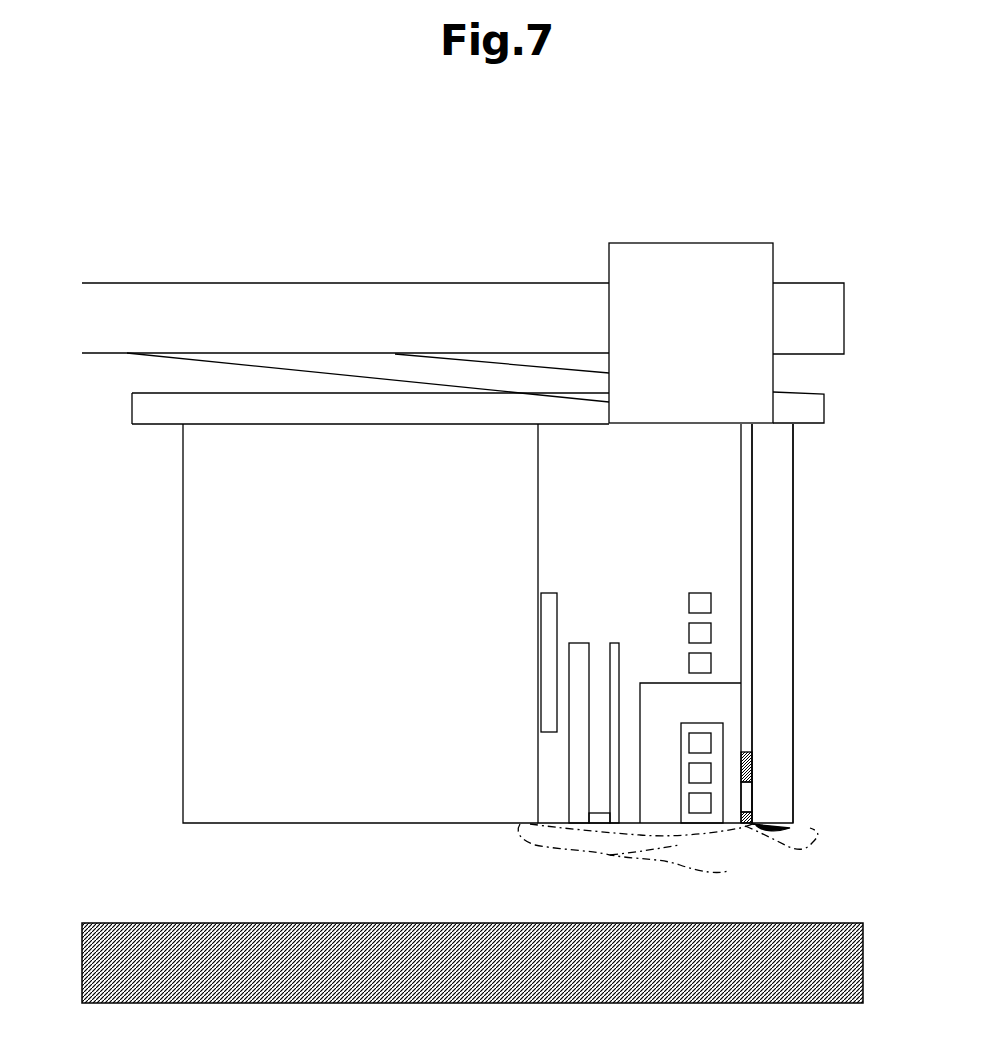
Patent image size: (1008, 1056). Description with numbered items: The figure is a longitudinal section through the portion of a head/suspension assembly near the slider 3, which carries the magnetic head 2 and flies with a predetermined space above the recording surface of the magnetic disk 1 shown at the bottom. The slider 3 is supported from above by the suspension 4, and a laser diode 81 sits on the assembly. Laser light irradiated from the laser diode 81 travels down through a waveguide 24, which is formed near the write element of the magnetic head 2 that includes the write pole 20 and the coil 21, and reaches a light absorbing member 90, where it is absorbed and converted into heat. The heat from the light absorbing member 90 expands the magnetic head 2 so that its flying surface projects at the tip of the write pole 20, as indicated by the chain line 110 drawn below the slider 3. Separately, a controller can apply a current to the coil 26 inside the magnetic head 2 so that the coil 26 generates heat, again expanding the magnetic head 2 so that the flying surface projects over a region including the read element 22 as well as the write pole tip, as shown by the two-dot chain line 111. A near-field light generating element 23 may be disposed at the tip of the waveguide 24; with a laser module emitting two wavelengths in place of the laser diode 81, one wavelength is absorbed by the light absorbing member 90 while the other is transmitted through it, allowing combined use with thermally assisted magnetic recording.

The magnetic disk 1 is at (289, 942).
The magnetic head 2 is at (612, 452).
The slider 3 is at (212, 772).
The suspension 4 is at (185, 306).
The write pole 20 is at (730, 722).
The coil 21 is at (705, 665).
The read element 22 is at (568, 828).
The near-field light generating element 23 is at (790, 828).
The waveguide 24 is at (747, 552).
The coil 26 is at (548, 617).
The laser diode 81 is at (685, 260).
The light absorbing member 90 is at (753, 773).
The chain line 110 is at (757, 858).
The two-dot chain line 111 is at (645, 852).